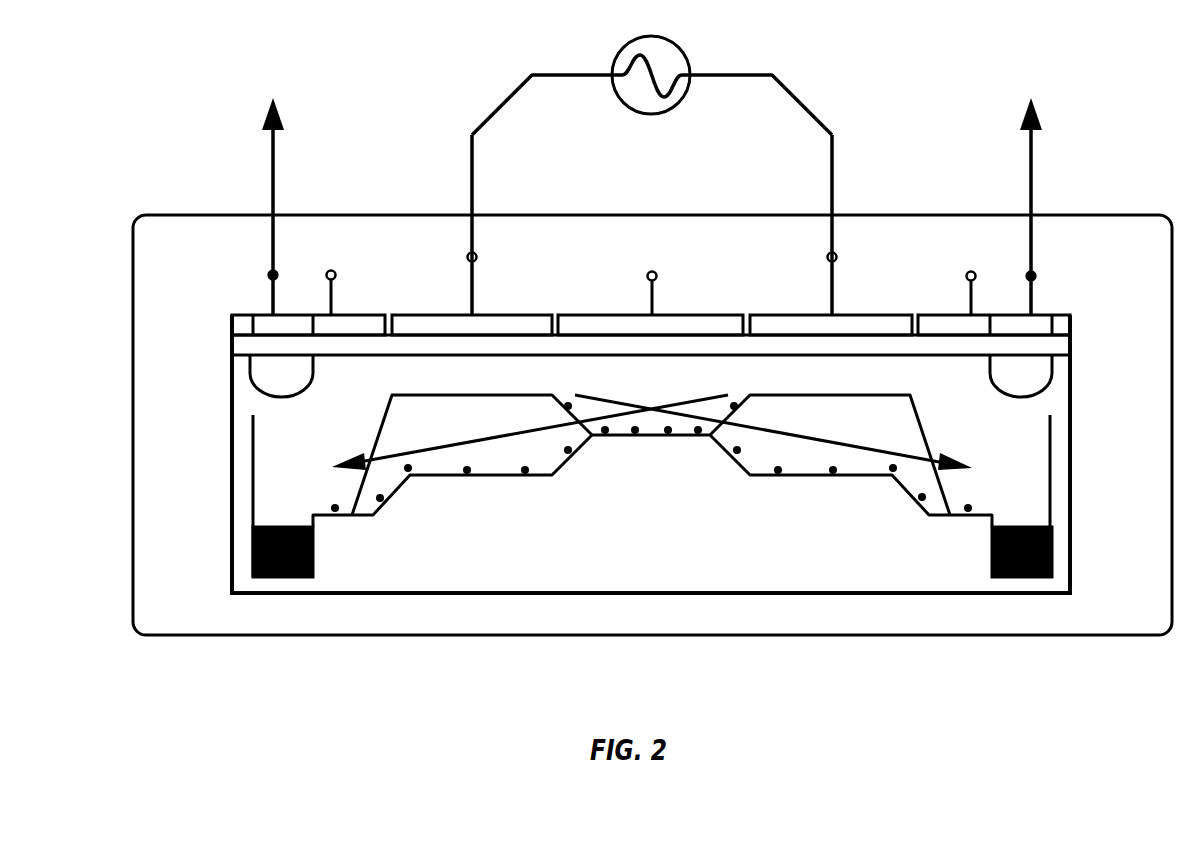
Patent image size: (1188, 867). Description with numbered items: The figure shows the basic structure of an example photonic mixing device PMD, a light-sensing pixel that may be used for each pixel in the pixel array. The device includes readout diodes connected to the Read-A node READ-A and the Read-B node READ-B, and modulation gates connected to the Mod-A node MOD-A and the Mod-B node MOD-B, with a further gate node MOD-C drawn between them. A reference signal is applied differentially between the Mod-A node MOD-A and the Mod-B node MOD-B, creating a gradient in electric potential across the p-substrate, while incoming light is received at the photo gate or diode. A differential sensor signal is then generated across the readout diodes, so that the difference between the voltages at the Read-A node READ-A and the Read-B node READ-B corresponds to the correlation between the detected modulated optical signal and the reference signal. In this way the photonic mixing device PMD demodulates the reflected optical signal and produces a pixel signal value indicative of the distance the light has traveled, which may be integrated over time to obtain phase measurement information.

The Read-A node READ-A is at (244, 206).
The Mod-A node MOD-A is at (519, 225).
The modulation electrode C MOD-C is at (703, 281).
The Mod-B node MOD-B is at (882, 225).
The Read-B node READ-B is at (1052, 185).
The photonic mixing device PMD is at (1111, 603).